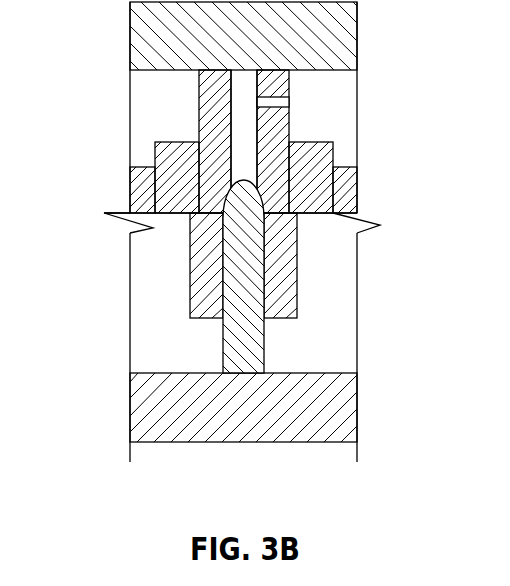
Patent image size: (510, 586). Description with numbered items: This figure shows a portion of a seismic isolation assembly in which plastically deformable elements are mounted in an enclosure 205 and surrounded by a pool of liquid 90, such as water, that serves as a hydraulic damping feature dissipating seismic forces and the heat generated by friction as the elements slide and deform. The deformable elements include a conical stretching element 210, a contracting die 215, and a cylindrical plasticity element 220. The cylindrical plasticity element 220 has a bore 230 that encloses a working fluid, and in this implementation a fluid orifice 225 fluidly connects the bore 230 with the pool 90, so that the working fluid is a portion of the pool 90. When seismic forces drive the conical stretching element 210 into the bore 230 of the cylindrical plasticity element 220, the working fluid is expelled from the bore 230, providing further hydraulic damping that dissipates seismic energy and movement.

The pool of liquid 90 is at (346, 105).
The enclosure 205 is at (265, 442).
The conical stretching element 210 is at (232, 348).
The contracting die 215 is at (190, 212).
The cylindrical plasticity element 220 is at (200, 122).
The fluid orifice 225 is at (289, 101).
The bore 230 is at (243, 132).